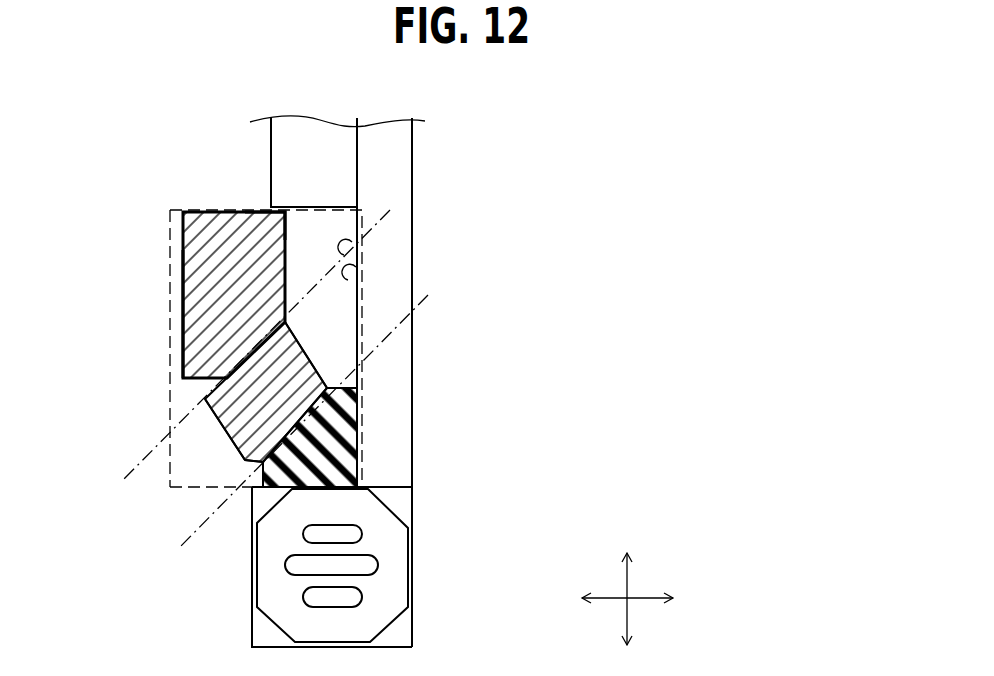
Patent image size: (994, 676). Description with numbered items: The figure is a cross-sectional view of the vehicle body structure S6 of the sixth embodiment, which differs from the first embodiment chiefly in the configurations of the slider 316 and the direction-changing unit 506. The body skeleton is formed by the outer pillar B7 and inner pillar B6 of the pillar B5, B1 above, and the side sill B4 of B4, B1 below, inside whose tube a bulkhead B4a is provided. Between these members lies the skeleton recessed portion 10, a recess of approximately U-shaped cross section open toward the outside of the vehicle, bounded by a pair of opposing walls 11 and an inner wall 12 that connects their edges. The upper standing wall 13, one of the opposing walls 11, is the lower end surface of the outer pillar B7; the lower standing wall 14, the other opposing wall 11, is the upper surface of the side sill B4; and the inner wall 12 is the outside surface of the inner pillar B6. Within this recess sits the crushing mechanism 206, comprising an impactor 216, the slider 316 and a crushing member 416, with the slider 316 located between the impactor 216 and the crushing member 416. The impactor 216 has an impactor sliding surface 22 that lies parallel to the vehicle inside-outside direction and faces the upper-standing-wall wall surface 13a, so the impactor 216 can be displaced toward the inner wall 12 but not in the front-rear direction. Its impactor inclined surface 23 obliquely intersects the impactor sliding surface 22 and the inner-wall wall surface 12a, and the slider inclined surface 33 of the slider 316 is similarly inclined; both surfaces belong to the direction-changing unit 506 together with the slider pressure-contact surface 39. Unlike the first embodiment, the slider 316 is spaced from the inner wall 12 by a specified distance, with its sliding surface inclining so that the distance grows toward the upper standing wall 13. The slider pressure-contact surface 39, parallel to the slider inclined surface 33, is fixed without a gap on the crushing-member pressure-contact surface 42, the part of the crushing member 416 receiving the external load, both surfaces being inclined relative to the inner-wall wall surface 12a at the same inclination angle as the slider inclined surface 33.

The vehicle body structure S6 is at (181, 103).
The impactor sliding surface 22 is at (203, 212).
The upper-standing-wall wall surface 13a is at (255, 226).
The crushing mechanism 206 is at (168, 250).
The impactor 216 is at (193, 310).
The impactor inclined surface 23 is at (235, 385).
The direction-changing unit 506 is at (285, 368).
The slider pressure-contact surface 39 is at (262, 455).
The crushing member 416 is at (257, 466).
The lower standing wall 14 is at (252, 553).
The opposing walls 11 is at (315, 363).
The skeleton recessed portion 10 is at (315, 363).
The upper standing wall 13 is at (357, 226).
The inner wall 12 is at (340, 262).
The slider inclined surface 33 is at (340, 300).
The slider 316 is at (338, 352).
The crushing-member pressure-contact surface 42 is at (340, 397).
The inner-wall wall surface 12a is at (340, 440).
The battery case B1 is at (388, 337).
The upper case B5 is at (382, 83).
The outer pillar B7 is at (305, 128).
The inner pillar B6 is at (382, 128).
The side sill B4 is at (413, 515).
The bulkhead B4a is at (387, 560).